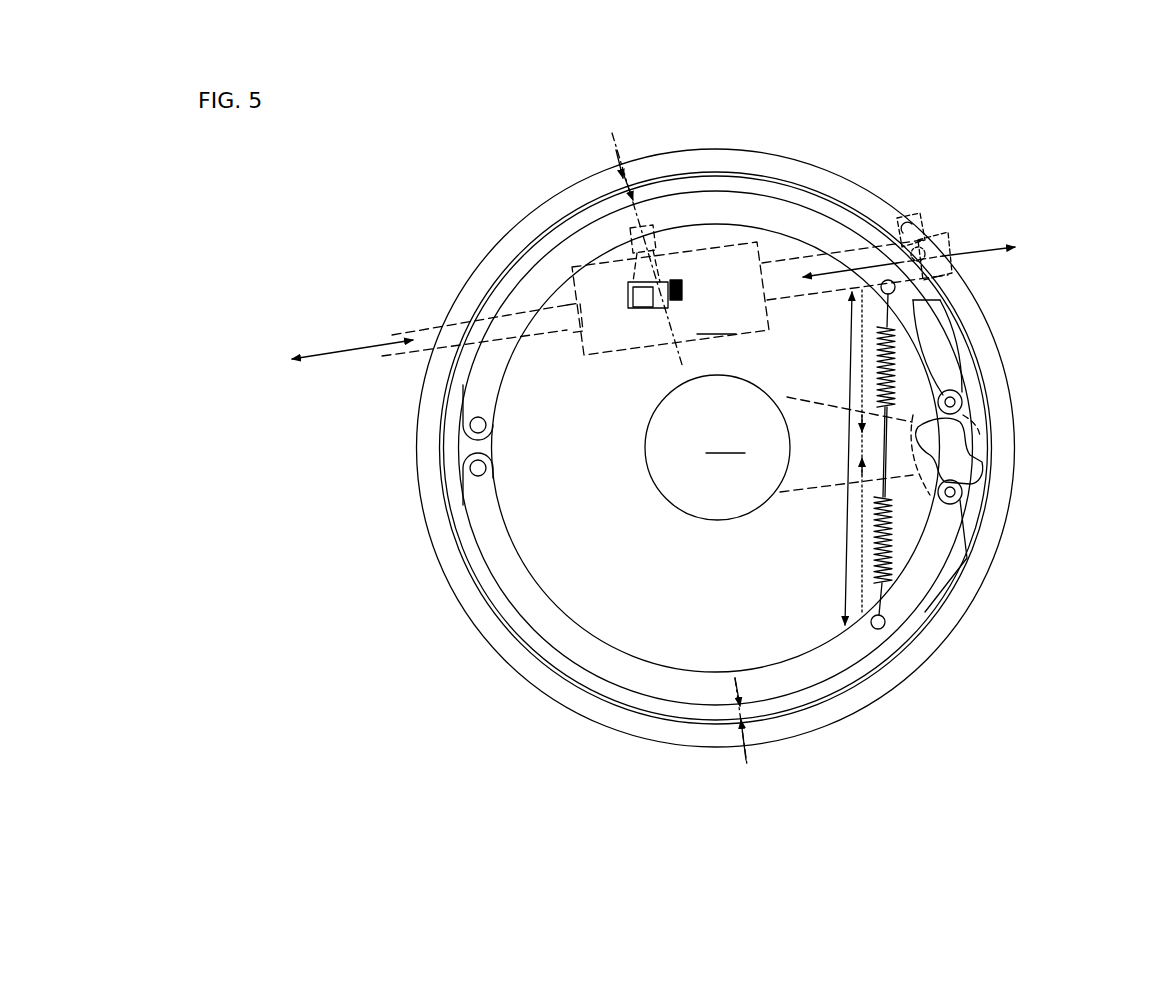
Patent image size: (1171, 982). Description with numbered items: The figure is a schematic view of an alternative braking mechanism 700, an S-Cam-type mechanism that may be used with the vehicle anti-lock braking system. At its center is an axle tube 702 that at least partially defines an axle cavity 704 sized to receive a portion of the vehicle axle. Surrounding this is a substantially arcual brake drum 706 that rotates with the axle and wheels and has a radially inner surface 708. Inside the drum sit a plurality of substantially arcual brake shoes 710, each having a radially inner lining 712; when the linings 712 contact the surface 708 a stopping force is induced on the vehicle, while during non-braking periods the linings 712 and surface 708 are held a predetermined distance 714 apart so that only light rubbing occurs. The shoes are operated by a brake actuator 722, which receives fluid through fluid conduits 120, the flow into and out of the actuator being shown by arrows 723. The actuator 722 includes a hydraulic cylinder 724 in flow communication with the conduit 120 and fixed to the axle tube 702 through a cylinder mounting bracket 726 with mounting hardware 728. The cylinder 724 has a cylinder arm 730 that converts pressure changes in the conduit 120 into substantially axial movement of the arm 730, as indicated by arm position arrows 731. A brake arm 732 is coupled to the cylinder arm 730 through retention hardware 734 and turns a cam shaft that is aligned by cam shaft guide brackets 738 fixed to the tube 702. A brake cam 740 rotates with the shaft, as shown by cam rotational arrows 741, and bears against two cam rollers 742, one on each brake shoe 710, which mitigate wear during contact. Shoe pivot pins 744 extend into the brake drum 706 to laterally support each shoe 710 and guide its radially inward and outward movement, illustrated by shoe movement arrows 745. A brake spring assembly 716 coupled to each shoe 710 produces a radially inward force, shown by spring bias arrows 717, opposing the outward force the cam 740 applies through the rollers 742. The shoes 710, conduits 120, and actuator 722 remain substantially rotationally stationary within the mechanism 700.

The alternative braking mechanism 700 is at (322, 222).
The axle tube 702 is at (663, 493).
The axle cavity 704 is at (717, 447).
The brake drum 706 is at (483, 262).
The radially inner surface 708 is at (548, 230).
The brake shoes 710 is at (658, 210).
The lining 712 is at (490, 607).
The predetermined distance 714 is at (622, 163).
The brake spring assembly 716 is at (887, 540).
The spring bias arrows 717 is at (863, 590).
The brake actuator 722 is at (800, 228).
The arrows 723 is at (330, 353).
The hydraulic cylinder 724 is at (668, 290).
The cylinder mounting bracket 726 is at (627, 365).
The mounting hardware 728 is at (682, 286).
The cylinder arm 730 is at (823, 290).
The arm position arrows 731 is at (978, 250).
The brake arm 732 is at (912, 380).
The retention hardware 734 is at (917, 210).
The cam shaft guide brackets 738 is at (822, 462).
The brake cam 740 is at (975, 456).
The cam rotational arrows 741 is at (953, 449).
The cam rollers 742 is at (962, 403).
The shoe pivot pins 744 is at (460, 466).
The shoe movement arrows 745 is at (843, 577).
The fluid conduits 120 is at (392, 335).